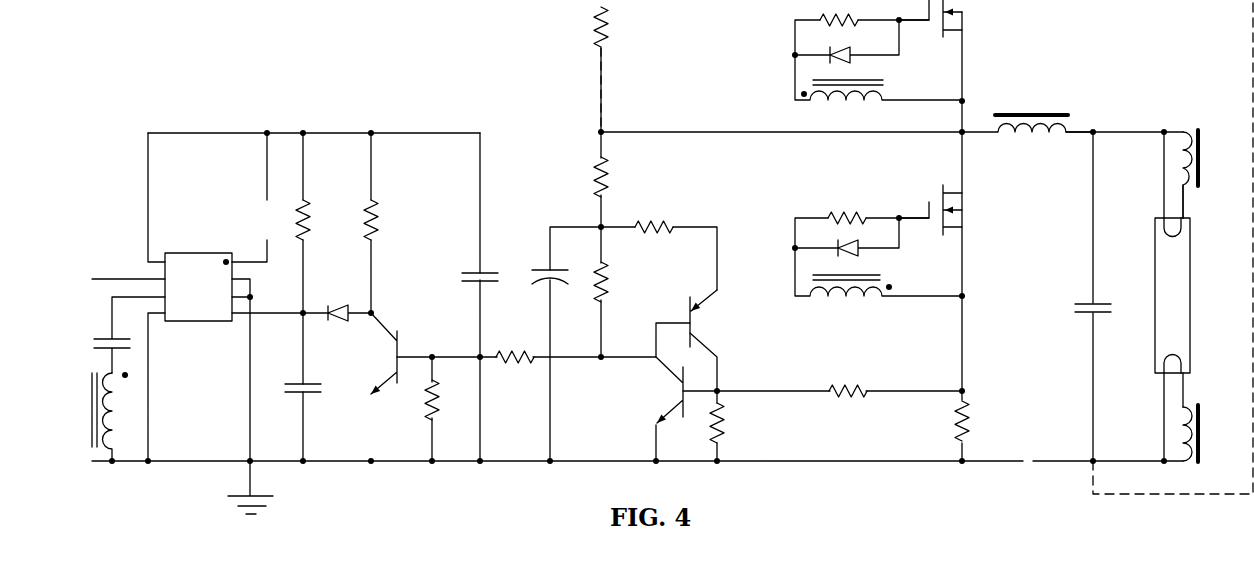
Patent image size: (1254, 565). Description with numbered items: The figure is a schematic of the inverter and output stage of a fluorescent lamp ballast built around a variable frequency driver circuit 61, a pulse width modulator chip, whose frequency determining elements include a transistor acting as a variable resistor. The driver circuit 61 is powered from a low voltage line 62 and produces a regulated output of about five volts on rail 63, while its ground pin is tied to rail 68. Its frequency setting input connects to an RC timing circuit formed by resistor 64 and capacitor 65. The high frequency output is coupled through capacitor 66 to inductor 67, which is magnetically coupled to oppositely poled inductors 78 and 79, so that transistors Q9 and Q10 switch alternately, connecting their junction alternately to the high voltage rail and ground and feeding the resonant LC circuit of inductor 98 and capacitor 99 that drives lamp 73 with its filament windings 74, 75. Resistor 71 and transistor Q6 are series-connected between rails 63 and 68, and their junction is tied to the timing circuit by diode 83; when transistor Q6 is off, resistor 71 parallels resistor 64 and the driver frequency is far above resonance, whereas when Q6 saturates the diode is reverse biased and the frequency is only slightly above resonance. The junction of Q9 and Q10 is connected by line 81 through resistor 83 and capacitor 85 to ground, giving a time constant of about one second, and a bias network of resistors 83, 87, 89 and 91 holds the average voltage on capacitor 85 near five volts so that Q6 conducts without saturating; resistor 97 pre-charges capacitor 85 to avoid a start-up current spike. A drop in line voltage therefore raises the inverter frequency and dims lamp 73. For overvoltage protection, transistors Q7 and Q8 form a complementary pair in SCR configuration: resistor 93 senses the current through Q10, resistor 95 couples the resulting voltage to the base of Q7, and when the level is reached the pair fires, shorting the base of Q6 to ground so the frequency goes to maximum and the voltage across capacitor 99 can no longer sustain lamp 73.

The driver circuit 61 is at (180, 322).
The low voltage line 62 is at (136, 278).
The rail 63 is at (200, 133).
The resistor 64 is at (317, 210).
The capacitor 65 is at (286, 390).
The capacitor 66 is at (95, 341).
The inductor 67 is at (90, 420).
The rail 68 is at (175, 461).
The resistor 71 is at (385, 210).
The lamp 73 is at (1192, 312).
The filament winding 74 is at (1203, 163).
The filament winding 75 is at (1203, 436).
The inductor 78 is at (840, 105).
The inductor 79 is at (840, 300).
The line 81 is at (713, 132).
The resistor / diode 83 is at (340, 305).
The capacitor 85 is at (532, 267).
The resistor 87 is at (612, 292).
The resistor 89 is at (505, 358).
The resistor 91 is at (425, 395).
The resistor 93 is at (990, 404).
The resistor 95 is at (850, 400).
The resistor 97 is at (612, 28).
The inductor 98 is at (1018, 115).
The capacitor 99 is at (1070, 310).
The transistor Q6 is at (376, 353).
The transistor Q7 is at (681, 400).
The transistor Q8 is at (685, 284).
The transistor Q9 is at (956, 18).
The transistor Q10 is at (960, 210).